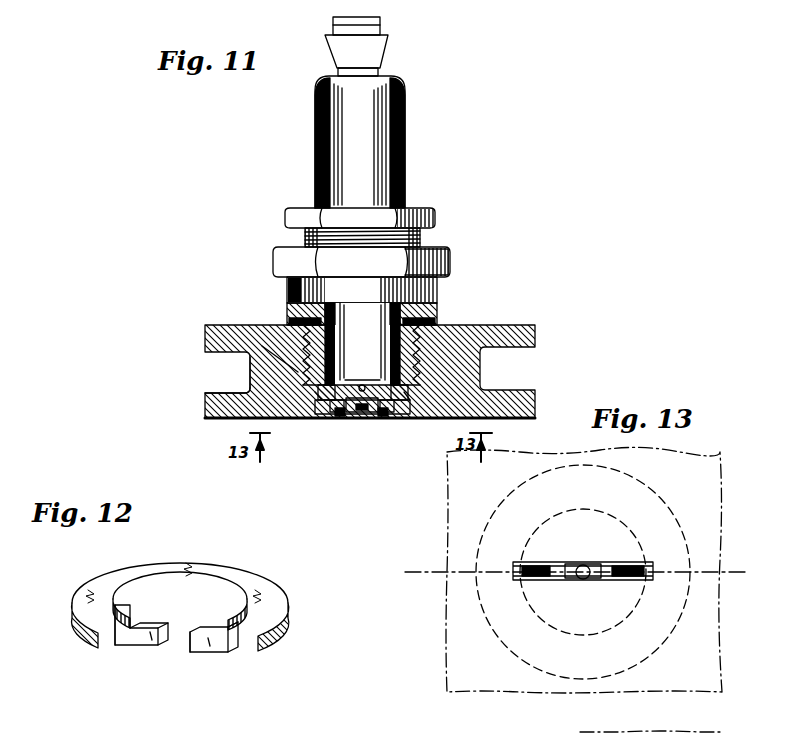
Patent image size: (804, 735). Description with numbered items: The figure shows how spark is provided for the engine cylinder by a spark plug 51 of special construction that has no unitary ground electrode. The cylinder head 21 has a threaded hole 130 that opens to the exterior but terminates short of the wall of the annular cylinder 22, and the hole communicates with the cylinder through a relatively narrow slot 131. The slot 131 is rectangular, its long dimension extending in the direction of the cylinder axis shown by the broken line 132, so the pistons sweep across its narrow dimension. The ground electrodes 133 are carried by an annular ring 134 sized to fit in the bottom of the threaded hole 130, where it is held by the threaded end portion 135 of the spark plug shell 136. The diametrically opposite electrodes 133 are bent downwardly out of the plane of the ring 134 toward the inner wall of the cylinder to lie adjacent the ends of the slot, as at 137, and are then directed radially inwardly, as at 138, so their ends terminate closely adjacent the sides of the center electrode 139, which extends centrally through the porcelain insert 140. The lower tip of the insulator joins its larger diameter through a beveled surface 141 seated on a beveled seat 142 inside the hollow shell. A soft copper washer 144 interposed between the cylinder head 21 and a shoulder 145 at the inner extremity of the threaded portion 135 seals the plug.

In FIG. 11, the spark plug 51 is at (312, 188).
In FIG. 11, the spark plug shell 136 is at (441, 247).
In FIG. 11, the cylinder head 21 is at (220, 326).
In FIG. 11, the annular cylinder 22 is at (218, 395).
In FIG. 13, the annular cylinder 22 is at (712, 450).
In FIG. 11, the beveled seat 142 is at (262, 372).
In FIG. 11, the threaded hole 130 is at (430, 356).
In FIG. 11, the porcelain insert 140 is at (357, 309).
In FIG. 11, the beveled surface 141 is at (382, 368).
In FIG. 11, the center electrode 139 is at (376, 388).
In FIG. 13, the center electrode 139 is at (596, 582).
In FIG. 11, the shoulder 145 is at (290, 318).
In FIG. 11, the soft copper washer 144 is at (430, 320).
In FIG. 11, the threaded end portion 135 is at (287, 330).
In FIG. 11, the annular ring 134 is at (425, 388).
In FIG. 12, the annular ring 134 is at (110, 598).
In FIG. 13, the annular ring 134 is at (512, 488).
In FIG. 11, the radially inwardly directed electrode portions 138 is at (346, 416).
In FIG. 12, the radially inwardly directed electrode portions 138 is at (150, 637).
In FIG. 13, the radially inwardly directed electrode portions 138 is at (538, 563).
In FIG. 11, the slot 131 is at (336, 418).
In FIG. 13, the slot 131 is at (580, 584).
In FIG. 11, the ground electrodes 133 is at (372, 420).
In FIG. 12, the ground electrodes 133 is at (202, 636).
In FIG. 13, the ground electrodes 133 is at (600, 562).
In FIG. 11, the downwardly bent electrode portions 137 is at (318, 420).
In FIG. 12, the downwardly bent electrode portions 137 is at (240, 650).
In FIG. 13, the cylinder axis 132 is at (428, 578).